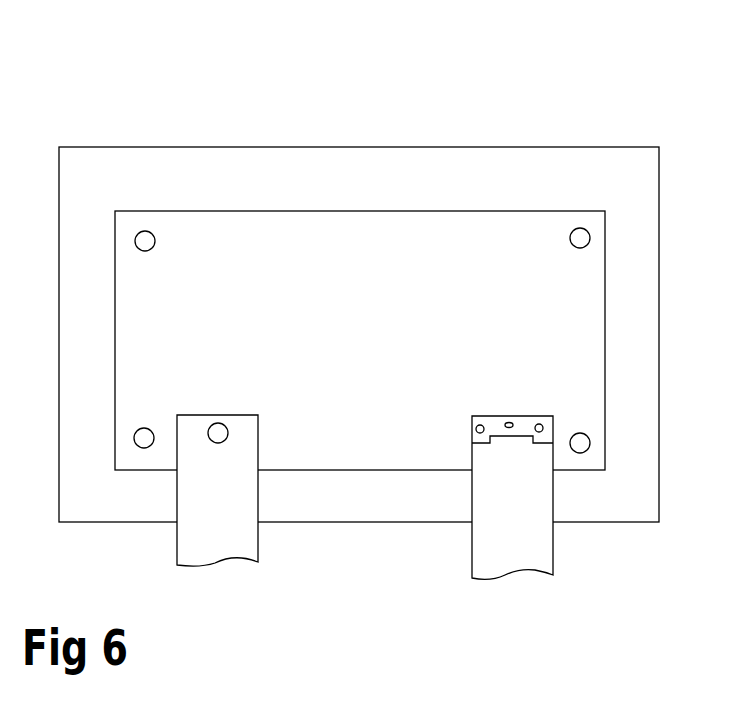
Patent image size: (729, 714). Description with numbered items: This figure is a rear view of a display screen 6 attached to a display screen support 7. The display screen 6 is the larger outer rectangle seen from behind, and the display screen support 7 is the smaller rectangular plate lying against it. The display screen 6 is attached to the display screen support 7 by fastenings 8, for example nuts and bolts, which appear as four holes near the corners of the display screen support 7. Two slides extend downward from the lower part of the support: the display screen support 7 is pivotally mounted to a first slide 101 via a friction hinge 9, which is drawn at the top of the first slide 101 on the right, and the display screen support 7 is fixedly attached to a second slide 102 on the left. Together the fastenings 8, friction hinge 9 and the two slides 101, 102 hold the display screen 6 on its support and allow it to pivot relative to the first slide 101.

The display screen 6 is at (426, 148).
The display screen support 7 is at (228, 215).
The fastenings 8 is at (146, 233).
The friction hinge 9 is at (524, 423).
The first slide 101 is at (508, 535).
The second slide 102 is at (224, 513).